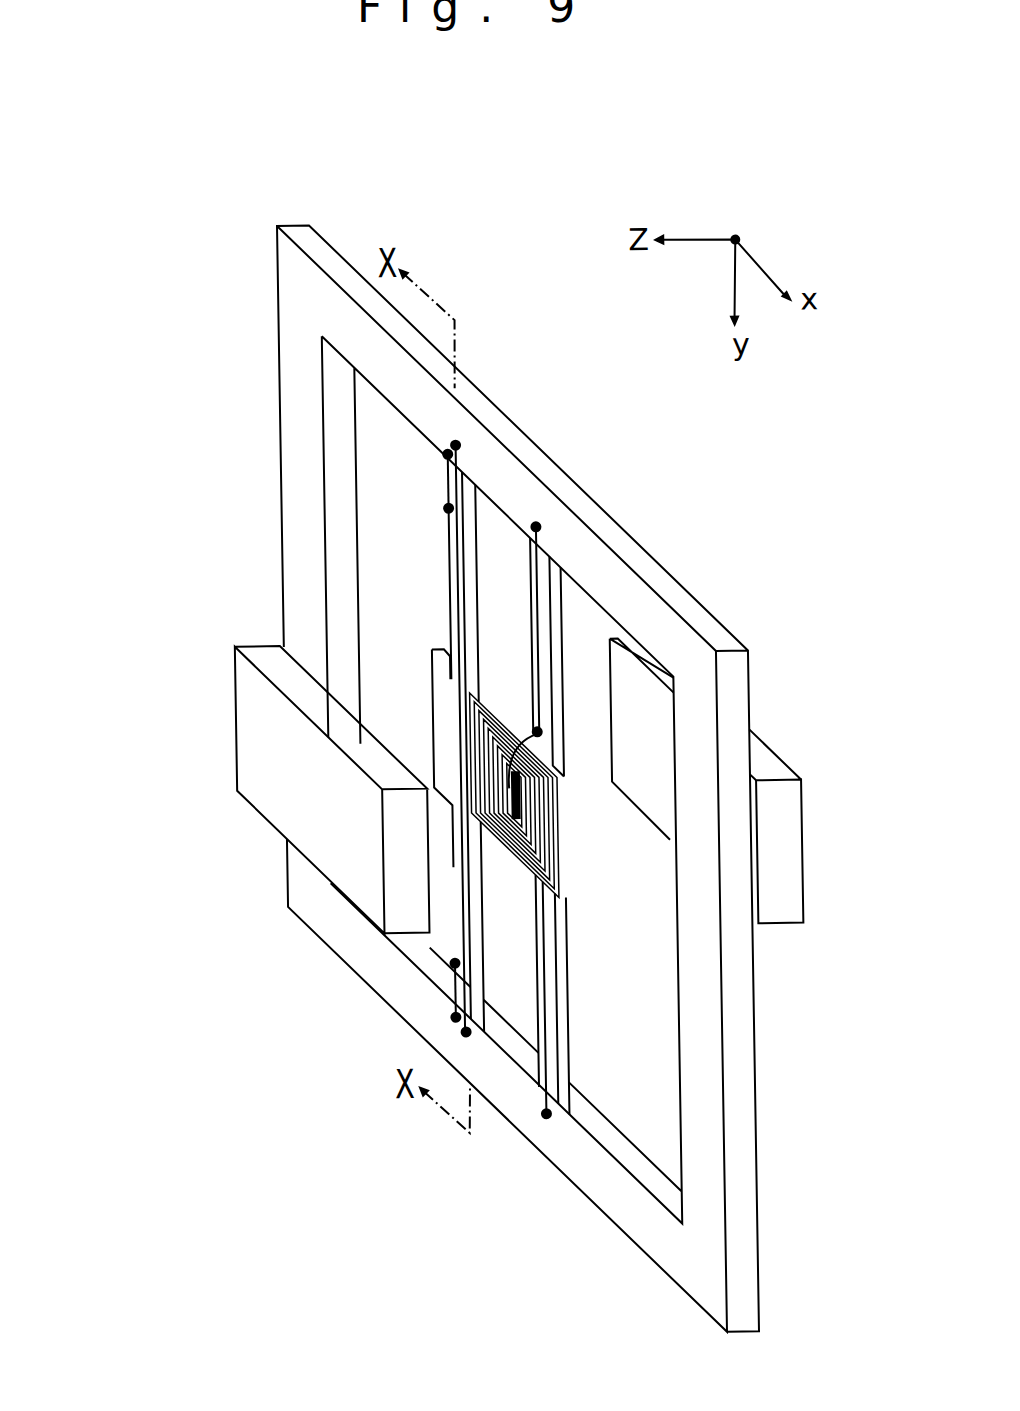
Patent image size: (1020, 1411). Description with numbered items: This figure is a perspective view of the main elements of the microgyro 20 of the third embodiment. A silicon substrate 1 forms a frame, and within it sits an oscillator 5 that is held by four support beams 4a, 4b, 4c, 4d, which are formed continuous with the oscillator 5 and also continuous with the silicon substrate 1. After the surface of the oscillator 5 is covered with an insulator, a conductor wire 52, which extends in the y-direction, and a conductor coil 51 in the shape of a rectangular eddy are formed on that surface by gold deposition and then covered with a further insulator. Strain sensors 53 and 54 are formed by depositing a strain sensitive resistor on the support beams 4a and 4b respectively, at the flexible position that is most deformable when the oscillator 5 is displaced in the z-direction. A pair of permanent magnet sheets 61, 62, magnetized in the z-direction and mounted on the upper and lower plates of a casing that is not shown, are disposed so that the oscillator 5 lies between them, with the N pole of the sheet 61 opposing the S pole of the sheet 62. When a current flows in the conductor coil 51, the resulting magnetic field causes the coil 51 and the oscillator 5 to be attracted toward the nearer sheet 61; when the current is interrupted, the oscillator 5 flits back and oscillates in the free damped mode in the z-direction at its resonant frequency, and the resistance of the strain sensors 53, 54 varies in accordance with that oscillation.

The microgyro 20 is at (465, 779).
The silicon substrate 1 is at (472, 779).
The support beam 4a is at (434, 627).
The support beam 4b is at (394, 917).
The support beam 4c is at (604, 666).
The support beam 4d is at (580, 996).
The oscillator 5 is at (567, 794).
The conductor coil 51 is at (587, 770).
The conductor wire 52 is at (461, 656).
The strain sensor 53 is at (510, 457).
The strain sensor 54 is at (488, 984).
The permanent magnet sheet 61 is at (299, 790).
The permanent magnet sheet 62 is at (786, 801).